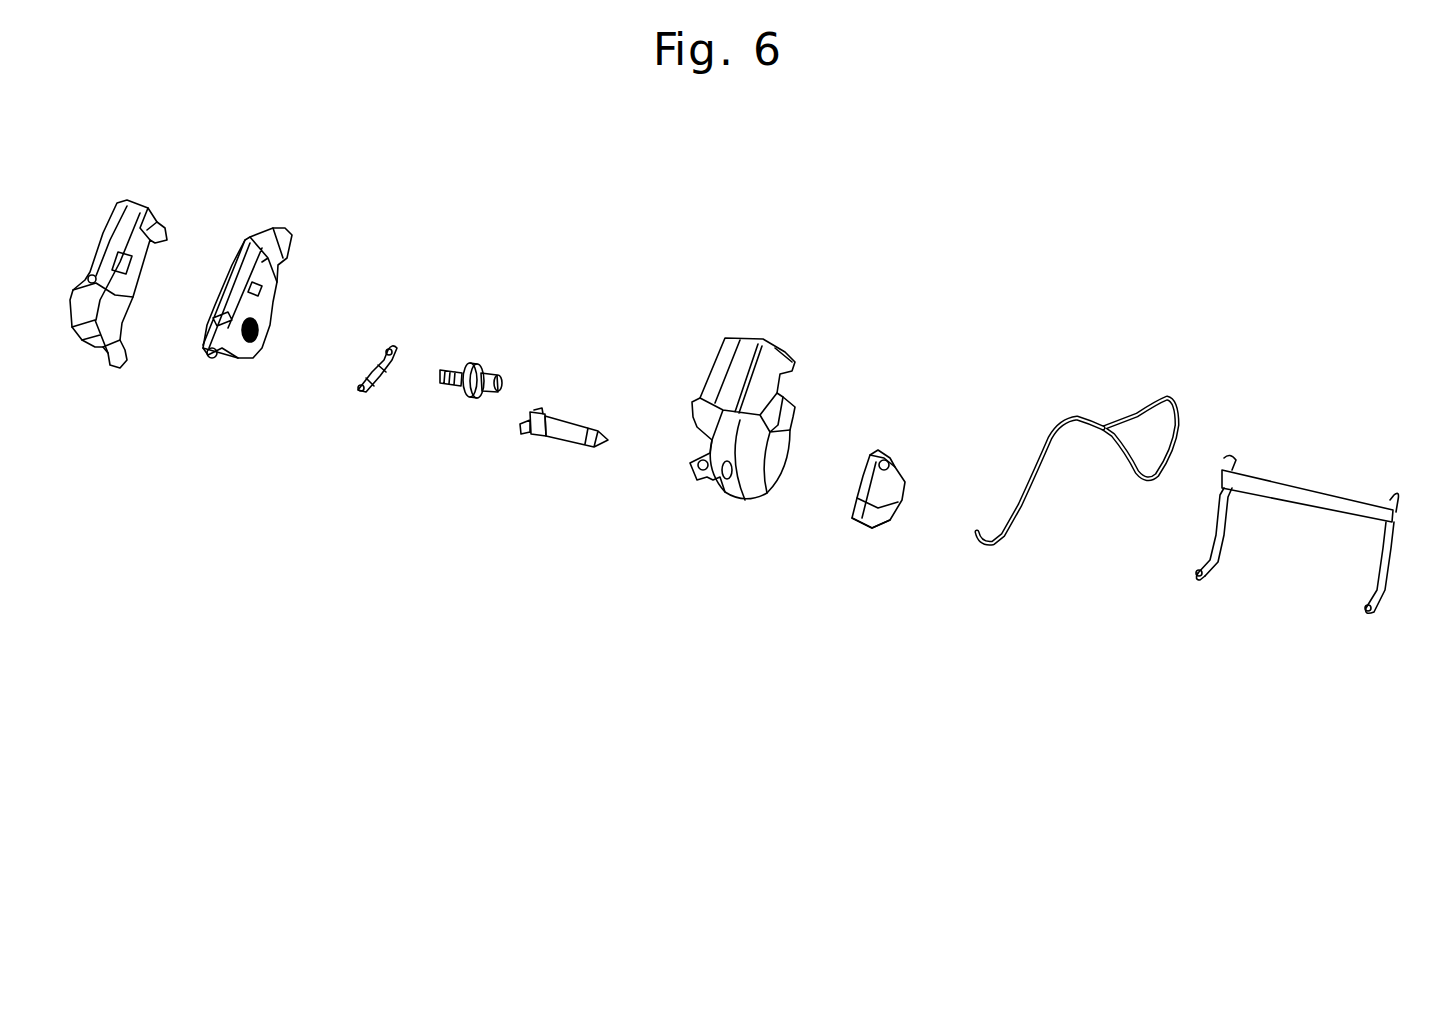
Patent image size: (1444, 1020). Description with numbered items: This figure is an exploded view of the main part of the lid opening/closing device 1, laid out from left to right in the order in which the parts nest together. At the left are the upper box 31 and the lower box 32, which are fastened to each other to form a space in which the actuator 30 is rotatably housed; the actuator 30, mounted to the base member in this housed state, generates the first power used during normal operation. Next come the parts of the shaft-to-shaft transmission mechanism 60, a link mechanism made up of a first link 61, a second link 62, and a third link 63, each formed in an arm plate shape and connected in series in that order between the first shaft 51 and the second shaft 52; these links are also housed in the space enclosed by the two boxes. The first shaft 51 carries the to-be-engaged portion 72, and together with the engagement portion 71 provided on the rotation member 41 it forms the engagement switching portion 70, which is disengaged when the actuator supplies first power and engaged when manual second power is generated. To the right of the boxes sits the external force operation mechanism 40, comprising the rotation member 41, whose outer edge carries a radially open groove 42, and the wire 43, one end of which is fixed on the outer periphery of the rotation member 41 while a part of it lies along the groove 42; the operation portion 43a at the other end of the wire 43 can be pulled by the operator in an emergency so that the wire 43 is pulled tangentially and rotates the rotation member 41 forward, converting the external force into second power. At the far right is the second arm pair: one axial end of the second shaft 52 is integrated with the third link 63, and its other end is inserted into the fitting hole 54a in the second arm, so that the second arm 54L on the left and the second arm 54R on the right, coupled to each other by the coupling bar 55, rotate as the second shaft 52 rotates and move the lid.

The lid opening/closing device 1 is at (882, 328).
The actuator 30 is at (250, 252).
The upper box 31 is at (152, 222).
The lower box 32 is at (735, 372).
The external force operation mechanism 40 is at (923, 541).
The rotation member 41 is at (887, 495).
The groove 42 is at (858, 520).
The wire 43 is at (1020, 508).
The operation portion 43a is at (1150, 402).
The first shaft 51 is at (452, 388).
The second shaft 52 is at (567, 438).
The fitting hole 54a is at (1197, 574).
The second arm (left side) 54L is at (1210, 562).
The second arm (right side) 54R is at (1377, 600).
The coupling bar 55 is at (1303, 490).
The shaft-to-shaft transmission mechanism 60 is at (578, 262).
The first link 61 is at (483, 362).
The second link 62 is at (382, 338).
The third link 63 is at (550, 418).
The engagement switching portion 70 is at (497, 652).
The engagement portion 71 is at (860, 467).
The to-be-engaged portion 72 is at (495, 395).